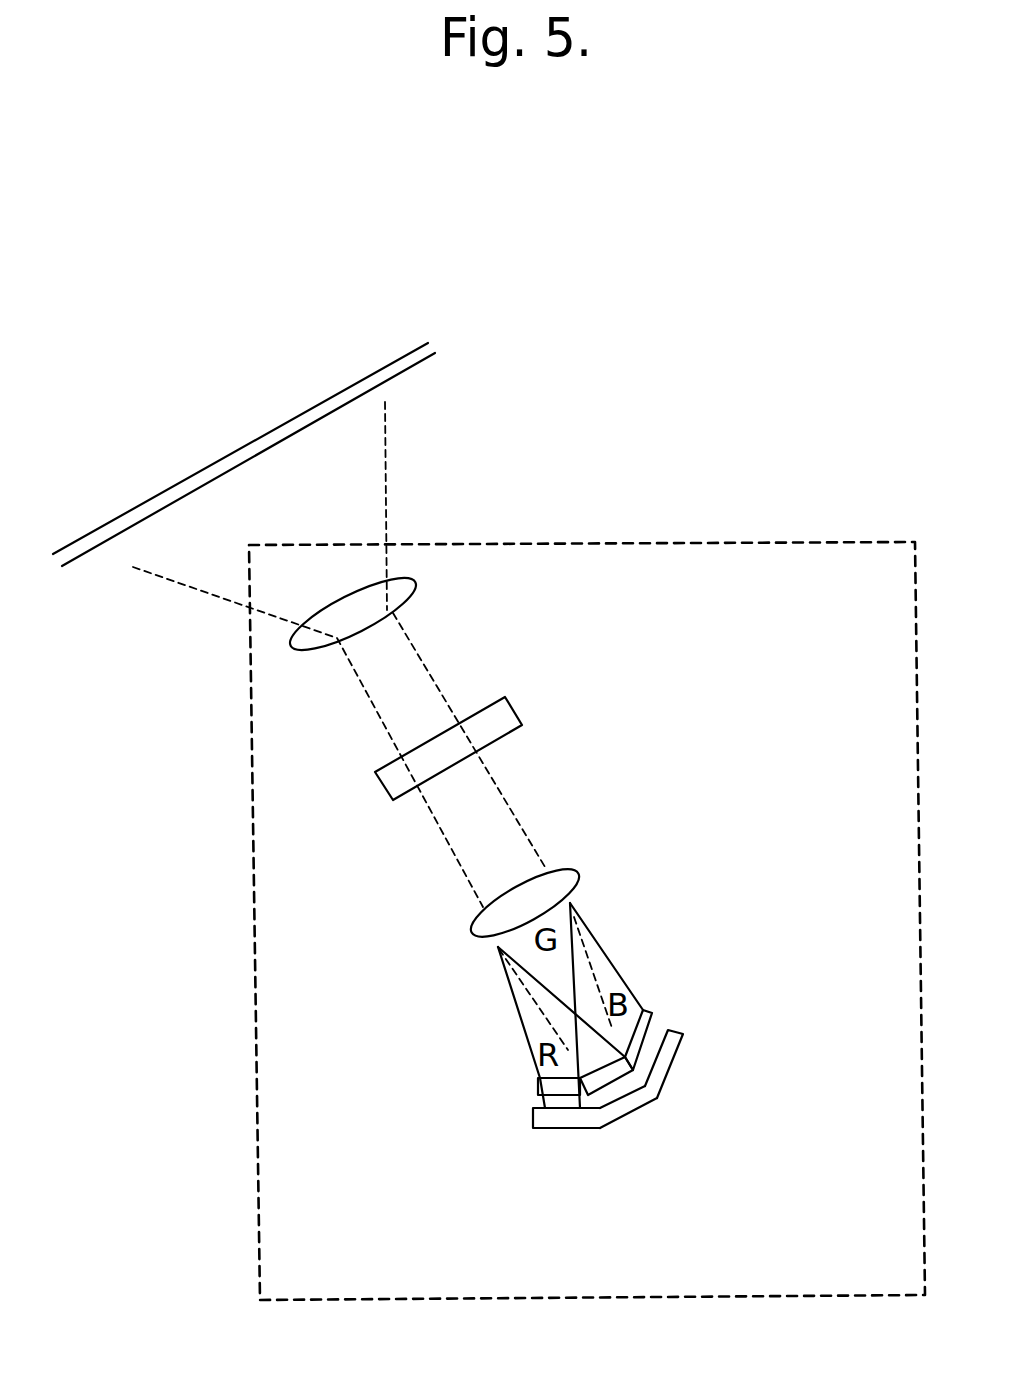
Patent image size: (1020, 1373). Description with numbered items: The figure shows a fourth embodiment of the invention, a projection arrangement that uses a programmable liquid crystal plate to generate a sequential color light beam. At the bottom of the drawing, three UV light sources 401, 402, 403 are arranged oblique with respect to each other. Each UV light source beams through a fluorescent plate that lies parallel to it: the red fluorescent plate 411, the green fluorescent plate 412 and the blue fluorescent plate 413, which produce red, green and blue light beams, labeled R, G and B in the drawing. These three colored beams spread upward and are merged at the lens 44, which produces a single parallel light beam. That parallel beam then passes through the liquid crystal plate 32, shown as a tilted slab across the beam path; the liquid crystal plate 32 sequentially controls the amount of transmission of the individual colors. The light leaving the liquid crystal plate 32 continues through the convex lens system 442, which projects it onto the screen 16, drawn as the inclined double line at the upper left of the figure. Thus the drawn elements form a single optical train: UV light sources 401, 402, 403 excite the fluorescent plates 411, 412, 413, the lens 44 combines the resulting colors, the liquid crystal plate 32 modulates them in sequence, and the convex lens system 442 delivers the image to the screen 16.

The screen 16 is at (447, 330).
The convex lens system 442 is at (407, 588).
The liquid crystal plate 32 is at (490, 713).
The lens 44 is at (472, 926).
The red fluorescent plate 411 is at (538, 1080).
The green fluorescent plate 412 is at (622, 1060).
The blue fluorescent plate 413 is at (645, 1010).
The UV light source 401 is at (562, 1120).
The UV light source 402 is at (633, 1112).
The UV light source 403 is at (673, 1067).